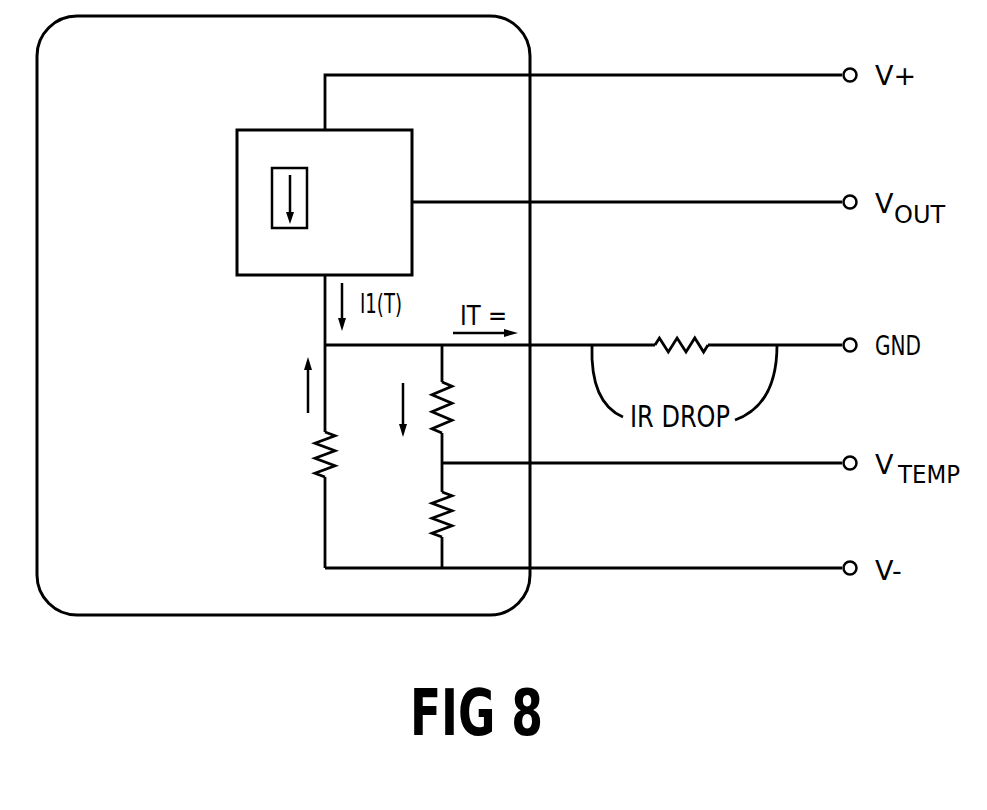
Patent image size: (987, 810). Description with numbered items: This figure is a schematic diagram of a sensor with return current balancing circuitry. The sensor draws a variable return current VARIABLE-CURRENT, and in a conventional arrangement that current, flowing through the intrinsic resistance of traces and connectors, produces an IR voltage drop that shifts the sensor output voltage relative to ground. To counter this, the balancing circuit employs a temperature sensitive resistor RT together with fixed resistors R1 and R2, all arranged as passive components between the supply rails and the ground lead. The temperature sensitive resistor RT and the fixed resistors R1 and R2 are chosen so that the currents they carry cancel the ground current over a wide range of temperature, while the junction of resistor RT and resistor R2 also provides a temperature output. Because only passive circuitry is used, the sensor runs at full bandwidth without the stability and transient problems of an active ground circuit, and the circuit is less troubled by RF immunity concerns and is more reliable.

The fixed resistor R1 is at (303, 454).
The temperature sensitive resistor RT is at (471, 407).
The fixed resistor R2 is at (469, 514).
The variable return current VARIABLE-CURRENT is at (270, 183).